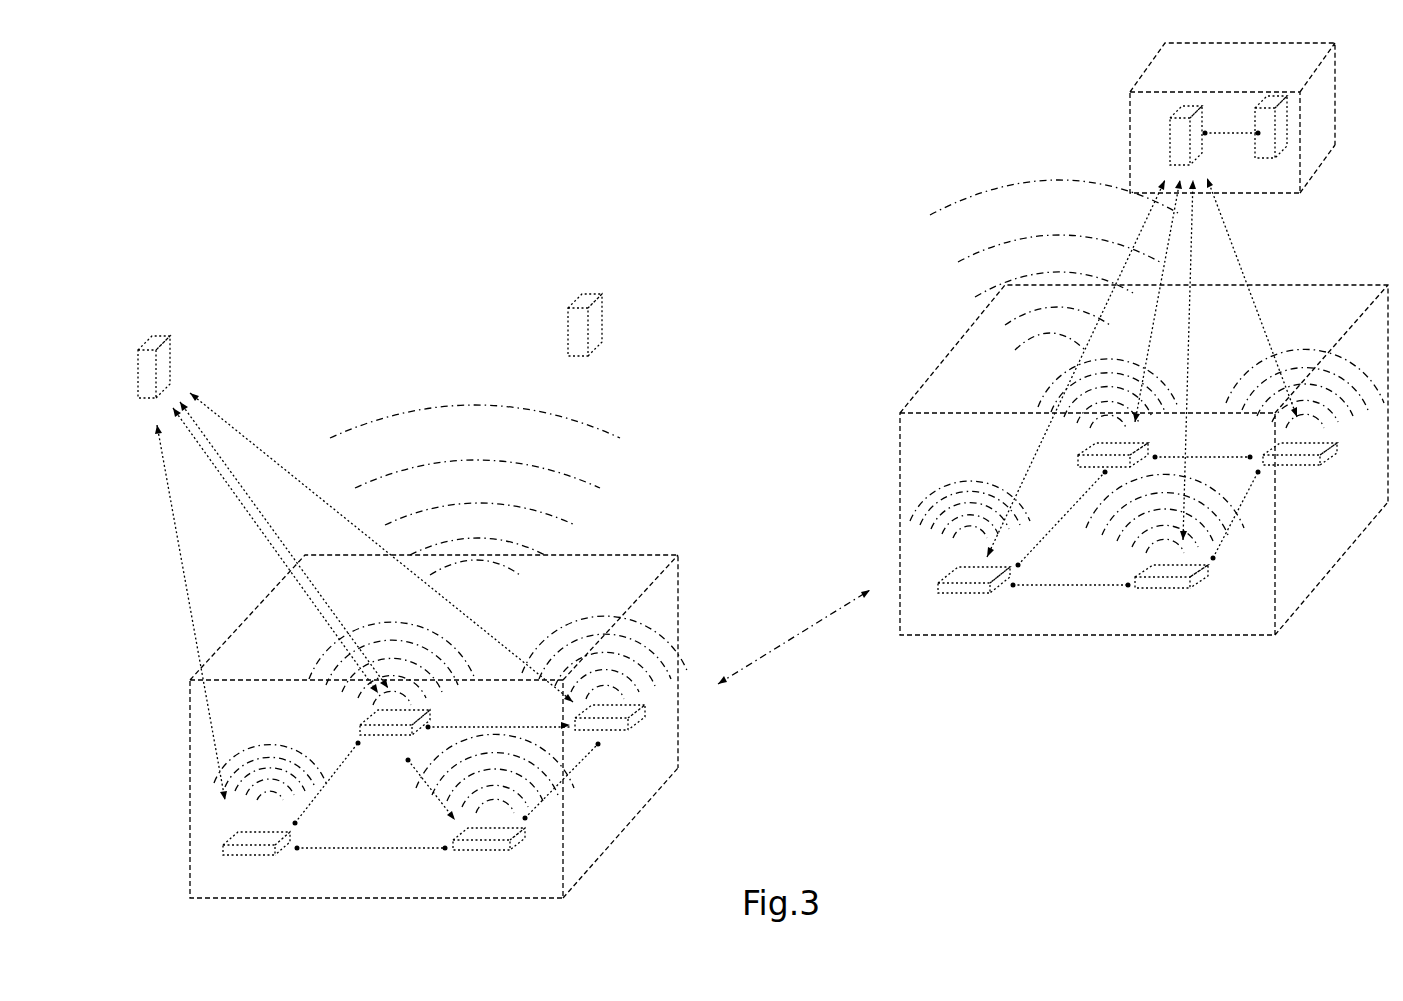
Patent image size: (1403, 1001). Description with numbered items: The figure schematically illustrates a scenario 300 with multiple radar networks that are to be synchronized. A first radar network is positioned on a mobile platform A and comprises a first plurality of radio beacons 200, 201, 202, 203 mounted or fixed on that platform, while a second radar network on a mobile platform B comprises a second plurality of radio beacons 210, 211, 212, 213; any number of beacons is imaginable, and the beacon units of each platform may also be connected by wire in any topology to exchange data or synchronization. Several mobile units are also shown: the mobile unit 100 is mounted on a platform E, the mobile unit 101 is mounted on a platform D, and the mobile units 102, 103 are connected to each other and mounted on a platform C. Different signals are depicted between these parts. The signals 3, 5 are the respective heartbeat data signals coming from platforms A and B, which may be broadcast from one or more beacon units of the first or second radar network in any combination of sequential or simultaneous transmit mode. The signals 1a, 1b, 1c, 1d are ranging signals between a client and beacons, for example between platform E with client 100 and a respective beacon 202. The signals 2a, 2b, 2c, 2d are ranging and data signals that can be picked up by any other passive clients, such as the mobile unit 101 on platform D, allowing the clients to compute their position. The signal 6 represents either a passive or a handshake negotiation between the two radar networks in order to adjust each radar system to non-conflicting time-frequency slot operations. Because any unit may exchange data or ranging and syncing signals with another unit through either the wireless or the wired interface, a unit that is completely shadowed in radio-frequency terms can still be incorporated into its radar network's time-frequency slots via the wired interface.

The multi-platform communication system 300 is at (448, 183).
The mobile unit 100 is at (150, 349).
The mobile unit 101 is at (591, 305).
The mobile unit 102 is at (1157, 135).
The mobile unit 103 is at (1302, 127).
The radio beacon 200 is at (256, 861).
The radio beacon 201 is at (489, 856).
The radio beacon 202 is at (395, 737).
The radio beacon 203 is at (621, 733).
The radio beacon 210 is at (974, 595).
The radio beacon 211 is at (1171, 592).
The radio beacon 212 is at (1088, 460).
The radio beacon 213 is at (1300, 472).
The ranging signal 1a is at (182, 612).
The ranging signal 1b is at (275, 550).
The ranging signal 1c is at (284, 545).
The ranging signal 1d is at (381, 547).
The ranging and data signal 2a is at (270, 753).
The ranging and data signal 2b is at (495, 773).
The ranging and data signal 2c is at (392, 648).
The ranging and data signal 2d is at (605, 643).
The heartbeat signal 3 is at (475, 490).
The heartbeat signal 5 is at (1054, 265).
The negotiation signal 6 is at (794, 635).